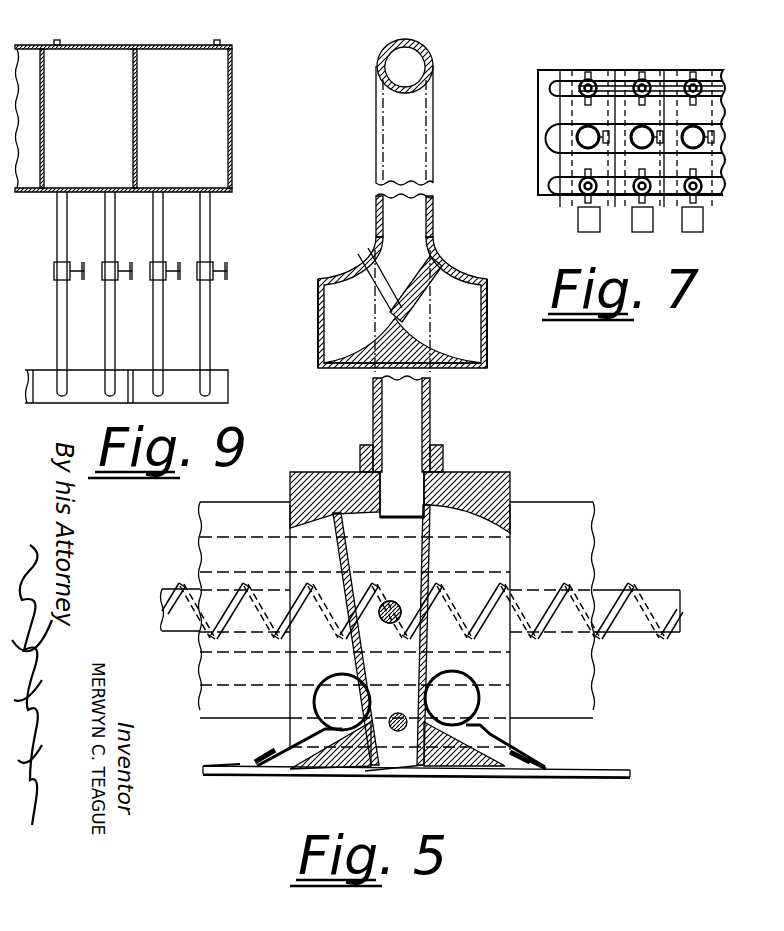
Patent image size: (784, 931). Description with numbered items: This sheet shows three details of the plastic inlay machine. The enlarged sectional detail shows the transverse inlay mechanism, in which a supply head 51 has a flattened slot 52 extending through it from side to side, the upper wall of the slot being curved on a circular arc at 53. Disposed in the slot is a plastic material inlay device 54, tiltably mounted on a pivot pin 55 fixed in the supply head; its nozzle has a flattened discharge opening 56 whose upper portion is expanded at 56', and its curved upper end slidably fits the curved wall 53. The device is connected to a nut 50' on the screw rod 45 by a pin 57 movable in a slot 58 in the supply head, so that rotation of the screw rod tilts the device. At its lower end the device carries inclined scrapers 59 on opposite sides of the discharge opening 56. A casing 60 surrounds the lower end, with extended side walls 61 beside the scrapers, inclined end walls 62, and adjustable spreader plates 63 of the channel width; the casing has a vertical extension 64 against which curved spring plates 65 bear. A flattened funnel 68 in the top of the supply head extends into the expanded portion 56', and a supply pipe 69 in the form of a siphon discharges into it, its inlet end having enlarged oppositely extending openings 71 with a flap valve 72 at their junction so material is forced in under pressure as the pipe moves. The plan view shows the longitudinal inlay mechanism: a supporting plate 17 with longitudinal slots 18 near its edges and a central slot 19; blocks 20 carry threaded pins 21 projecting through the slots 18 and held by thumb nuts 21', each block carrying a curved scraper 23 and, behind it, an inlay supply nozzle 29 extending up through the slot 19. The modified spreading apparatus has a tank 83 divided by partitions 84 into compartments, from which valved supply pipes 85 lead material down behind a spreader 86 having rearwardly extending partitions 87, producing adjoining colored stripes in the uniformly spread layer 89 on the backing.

In FIG. 7, the supporting plate 17 is at (540, 120).
In FIG. 7, the longitudinal slots 18 is at (548, 90).
In FIG. 7, the central slot 19 is at (548, 145).
In FIG. 7, the blocks 20 is at (620, 80).
In FIG. 7, the threaded pins 21 is at (663, 139).
In FIG. 7, the thumb nut 21' is at (635, 138).
In FIG. 7, the curved scraper 23 is at (580, 222).
In FIG. 7, the plastic inlay material supply nozzle 29 is at (577, 136).
In FIG. 5, the screw rod 45 is at (662, 598).
In FIG. 5, the nut 50' is at (376, 635).
In FIG. 5, the supply head 51 is at (500, 472).
In FIG. 5, the flattened slot 52 is at (504, 548).
In FIG. 5, the curved wall 53 is at (306, 533).
In FIG. 5, the plastic material inlay device 54 is at (445, 770).
In FIG. 5, the pivot pin 55 is at (400, 712).
In FIG. 5, the discharge opening 56 is at (394, 786).
In FIG. 5, the expanded upper portion 56' is at (353, 607).
In FIG. 5, the pin 57 is at (391, 624).
In FIG. 5, the slot 58 is at (396, 600).
In FIG. 5, the inclined scrapers 59 is at (318, 770).
In FIG. 5, the casing 60 is at (302, 741).
In FIG. 5, the side walls 61 is at (272, 776).
In FIG. 5, the inclined end walls 62 is at (504, 751).
In FIG. 5, the spreader plates 63 is at (262, 761).
In FIG. 5, the vertical extension 64 is at (470, 730).
In FIG. 5, the spring plates 65 is at (318, 693).
In FIG. 5, the flattened funnel 68 is at (386, 512).
In FIG. 5, the plastic inlay material supply pipe 69 is at (430, 413).
In FIG. 5, the enlarged oppositely extending openings 71 is at (325, 323).
In FIG. 5, the flap valve 72 is at (424, 300).
In FIG. 9, the tank 83 is at (134, 46).
In FIG. 9, the partitions 84 is at (44, 134).
In FIG. 9, the valved supply pipes 85 is at (110, 330).
In FIG. 9, the spreader 86 is at (186, 378).
In FIG. 9, the rearwardly extending partitions 87 is at (35, 372).
In FIG. 5, the uniformly spread layer 89 is at (630, 770).